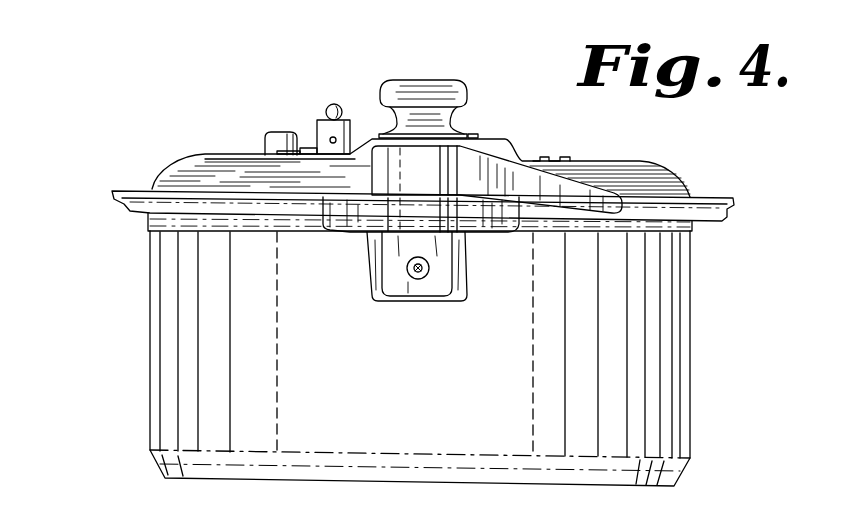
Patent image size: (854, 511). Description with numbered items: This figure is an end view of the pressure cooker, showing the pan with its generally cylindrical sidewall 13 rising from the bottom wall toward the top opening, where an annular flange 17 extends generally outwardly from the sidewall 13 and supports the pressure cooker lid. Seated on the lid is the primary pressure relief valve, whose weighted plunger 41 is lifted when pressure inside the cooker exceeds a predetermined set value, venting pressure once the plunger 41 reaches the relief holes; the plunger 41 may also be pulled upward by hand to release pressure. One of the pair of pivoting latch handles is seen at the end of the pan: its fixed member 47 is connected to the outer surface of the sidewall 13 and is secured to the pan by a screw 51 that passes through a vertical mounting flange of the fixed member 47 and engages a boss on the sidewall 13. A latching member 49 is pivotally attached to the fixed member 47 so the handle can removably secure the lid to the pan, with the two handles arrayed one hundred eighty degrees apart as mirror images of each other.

The sidewall 13 is at (147, 360).
The annular flange 17 is at (118, 206).
The weighted plunger 41 is at (337, 104).
The fixed member 47 is at (367, 258).
The latching member 49 is at (506, 147).
The screw 51 is at (413, 276).